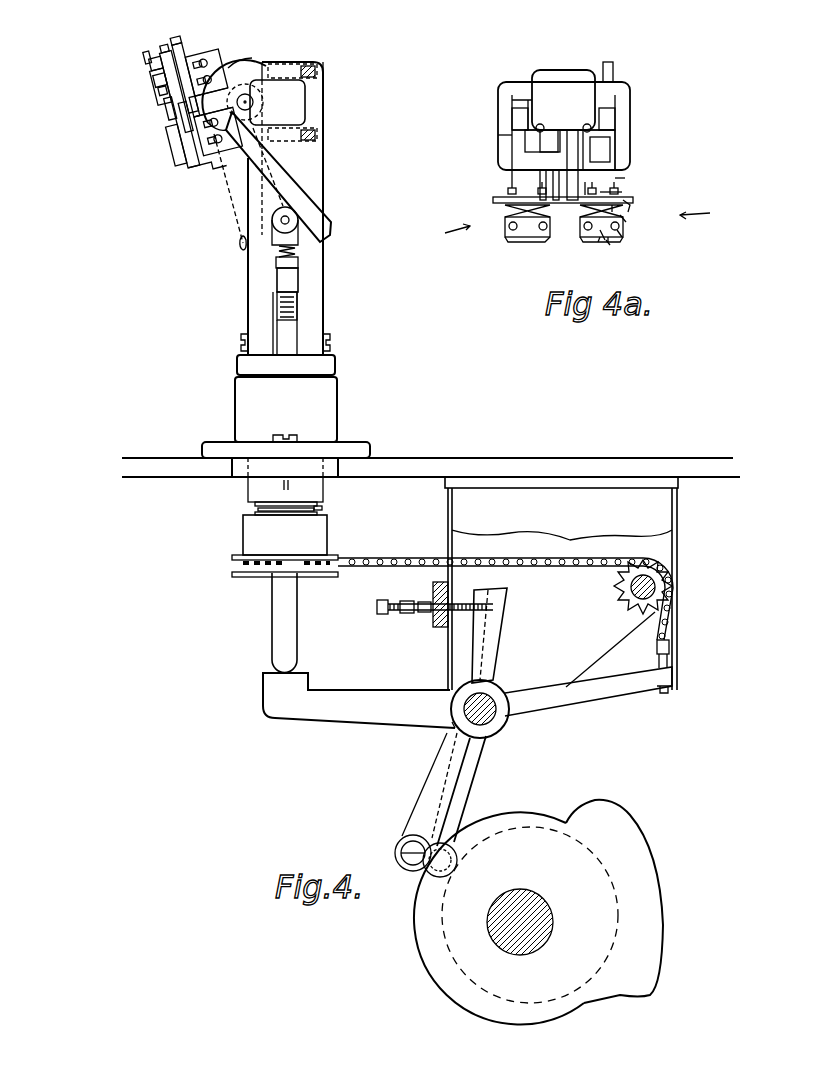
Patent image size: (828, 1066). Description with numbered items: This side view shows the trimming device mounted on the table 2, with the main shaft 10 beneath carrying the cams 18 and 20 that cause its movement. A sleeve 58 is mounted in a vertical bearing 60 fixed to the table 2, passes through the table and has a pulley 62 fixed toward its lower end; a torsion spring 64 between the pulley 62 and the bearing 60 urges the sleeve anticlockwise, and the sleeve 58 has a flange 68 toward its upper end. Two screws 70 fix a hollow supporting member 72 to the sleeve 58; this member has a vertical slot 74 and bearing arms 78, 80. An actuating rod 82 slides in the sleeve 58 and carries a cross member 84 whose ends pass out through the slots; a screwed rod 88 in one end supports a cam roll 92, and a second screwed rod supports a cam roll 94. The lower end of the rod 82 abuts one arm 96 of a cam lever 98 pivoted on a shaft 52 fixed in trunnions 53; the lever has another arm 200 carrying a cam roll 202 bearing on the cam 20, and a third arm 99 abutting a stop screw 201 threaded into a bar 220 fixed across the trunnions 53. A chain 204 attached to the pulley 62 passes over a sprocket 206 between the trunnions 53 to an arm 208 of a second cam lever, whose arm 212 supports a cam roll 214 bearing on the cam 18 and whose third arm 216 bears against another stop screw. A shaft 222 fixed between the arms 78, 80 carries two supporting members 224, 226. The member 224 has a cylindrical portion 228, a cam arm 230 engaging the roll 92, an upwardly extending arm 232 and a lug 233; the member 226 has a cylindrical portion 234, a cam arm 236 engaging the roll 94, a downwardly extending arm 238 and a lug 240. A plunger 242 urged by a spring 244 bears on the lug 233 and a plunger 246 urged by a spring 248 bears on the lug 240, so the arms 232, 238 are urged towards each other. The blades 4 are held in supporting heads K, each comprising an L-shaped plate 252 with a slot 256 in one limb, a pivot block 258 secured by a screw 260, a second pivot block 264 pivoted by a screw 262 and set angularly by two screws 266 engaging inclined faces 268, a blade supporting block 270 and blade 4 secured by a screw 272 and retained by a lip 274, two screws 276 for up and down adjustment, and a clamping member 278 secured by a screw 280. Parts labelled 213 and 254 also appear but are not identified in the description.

In FIG. 4, the table 2 is at (398, 462).
In FIG. 4, the blades 4 is at (165, 90).
In FIG. 4, the main shaft 10 is at (531, 931).
In FIG. 4, the cam 18 is at (610, 990).
In FIG. 4, the cam 20 is at (420, 915).
In FIG. 4, the shaft 52 is at (490, 726).
In FIG. 4, the trunnions 53 is at (580, 530).
In FIG. 4, the sleeve 58 is at (323, 508).
In FIG. 4, the vertical bearing 60 is at (328, 401).
In FIG. 4, the pulley 62 is at (320, 538).
In FIG. 4, the torsion spring 64 is at (300, 503).
In FIG. 4, the flange 68 is at (330, 364).
In FIG. 4, the screws 70 is at (332, 344).
In FIG. 4, the hollow supporting member 72 is at (310, 305).
In FIG. 4A, the hollow supporting member 72 is at (560, 75).
In FIG. 4, the vertical slot 74 is at (292, 318).
In FIG. 4, the bearing arm 78 is at (306, 110).
In FIG. 4A, the bearing arm 78 is at (630, 120).
In FIG. 4A, the bearing arm 80 is at (498, 140).
In FIG. 4, the actuating rod 82 is at (292, 626).
In FIG. 4, the cross member 84 is at (292, 282).
In FIG. 4, the screwed rod 88 is at (292, 252).
In FIG. 4, the cam roll 92 is at (300, 228).
In FIG. 4A, the cam roll 92 is at (615, 112).
In FIG. 4A, the cam roll 94 is at (512, 112).
In FIG. 4, the arm 96 is at (330, 690).
In FIG. 4, the cam lever 98 is at (417, 726).
In FIG. 4, the third arm 99 is at (497, 611).
In FIG. 4, the arm 200 is at (428, 780).
In FIG. 4, the stop screw 201 is at (412, 613).
In FIG. 4, the cam roll 202 is at (404, 838).
In FIG. 4, the chain 204 is at (405, 557).
In FIG. 4, the sprocket 206 is at (624, 598).
In FIG. 4, the arm 208 is at (606, 688).
In FIG. 4, the arm 212 is at (478, 777).
In FIG. 4, the screw 213 is at (390, 600).
In FIG. 4, the cam roll 214 is at (456, 852).
In FIG. 4, the third arm 216 is at (482, 590).
In FIG. 4, the bar 220 is at (440, 627).
In FIG. 4, the shaft 222 is at (254, 100).
In FIG. 4, the supporting member 224 is at (263, 62).
In FIG. 4A, the supporting member 224 is at (622, 185).
In FIG. 4, the supporting member 226 is at (222, 148).
In FIG. 4A, the supporting member 226 is at (498, 186).
In FIG. 4, the cylindrical portion 228 is at (222, 114).
In FIG. 4A, the cylindrical portion 228 is at (610, 140).
In FIG. 4, the cam arm 230 is at (305, 205).
In FIG. 4A, the cam arm 230 is at (614, 70).
In FIG. 4, the arm 232 is at (245, 62).
In FIG. 4A, the arm 232 is at (570, 205).
In FIG. 4, the lug 233 is at (269, 167).
In FIG. 4A, the cylindrical portion 234 is at (530, 145).
In FIG. 4, the cam arm 236 is at (240, 244).
In FIG. 4A, the cam arm 236 is at (512, 122).
In FIG. 4A, the arm 238 is at (563, 185).
In FIG. 4, the lug 240 is at (290, 58).
In FIG. 4A, the lug 240 is at (548, 140).
In FIG. 4, the plunger 242 is at (305, 142).
In FIG. 4A, the plunger 242 is at (586, 124).
In FIG. 4, the spring 244 is at (318, 134).
In FIG. 4, the plunger 246 is at (310, 66).
In FIG. 4A, the plunger 246 is at (541, 124).
In FIG. 4, the spring 248 is at (324, 76).
In FIG. 4, the L-shaped supporting plate 252 is at (236, 60).
In FIG. 4A, the L-shaped supporting plate 252 is at (633, 203).
In FIG. 4, the stem 254 is at (196, 96).
In FIG. 4A, the stem 254 is at (580, 180).
In FIG. 4, the slot 256 is at (210, 105).
In FIG. 4, the pivot block 258 is at (176, 98).
In FIG. 4A, the pivot block 258 is at (625, 207).
In FIG. 4A, the screw 260 is at (613, 194).
In FIG. 4, the screw 262 is at (191, 33).
In FIG. 4A, the screw 262 is at (622, 215).
In FIG. 4, the pivot block 264 is at (190, 40).
In FIG. 4A, the pivot block 264 is at (610, 242).
In FIG. 4, the screws 266 is at (212, 60).
In FIG. 4A, the screws 266 is at (600, 181).
In FIG. 4, the inclined faces 268 is at (200, 55).
In FIG. 4A, the inclined faces 268 is at (626, 212).
In FIG. 4, the blade supporting block 270 is at (160, 95).
In FIG. 4, the screw 272 is at (162, 70).
In FIG. 4, the lip 274 is at (164, 62).
In FIG. 4, the screws 276 is at (176, 38).
In FIG. 4A, the screws 276 is at (600, 240).
In FIG. 4, the clamping member 278 is at (164, 48).
In FIG. 4A, the clamping member 278 is at (620, 232).
In FIG. 4, the screw 280 is at (158, 46).
In FIG. 4A, the screw 280 is at (608, 242).
In FIG. 4A, the supporting head K is at (576, 224).